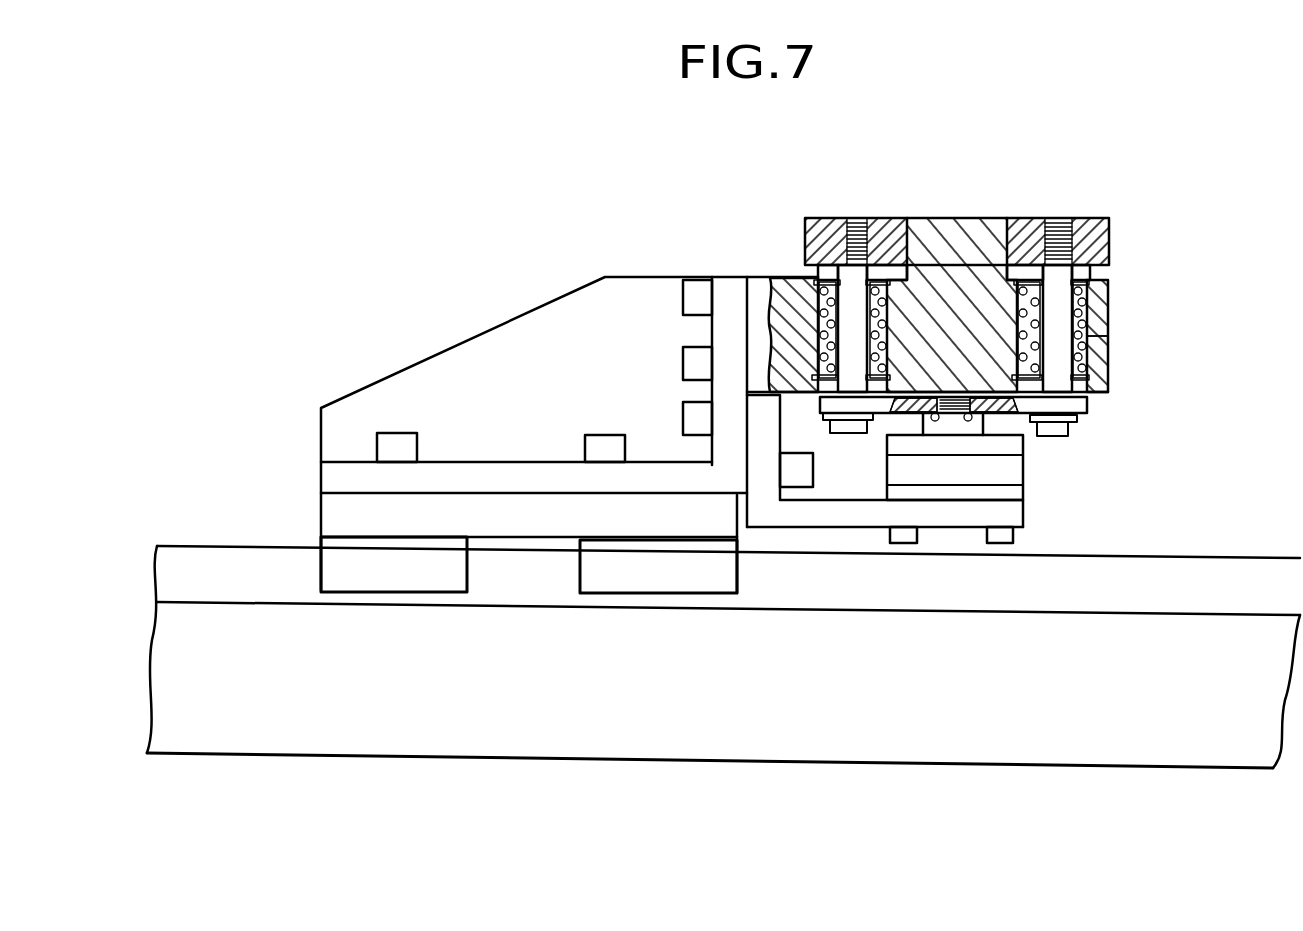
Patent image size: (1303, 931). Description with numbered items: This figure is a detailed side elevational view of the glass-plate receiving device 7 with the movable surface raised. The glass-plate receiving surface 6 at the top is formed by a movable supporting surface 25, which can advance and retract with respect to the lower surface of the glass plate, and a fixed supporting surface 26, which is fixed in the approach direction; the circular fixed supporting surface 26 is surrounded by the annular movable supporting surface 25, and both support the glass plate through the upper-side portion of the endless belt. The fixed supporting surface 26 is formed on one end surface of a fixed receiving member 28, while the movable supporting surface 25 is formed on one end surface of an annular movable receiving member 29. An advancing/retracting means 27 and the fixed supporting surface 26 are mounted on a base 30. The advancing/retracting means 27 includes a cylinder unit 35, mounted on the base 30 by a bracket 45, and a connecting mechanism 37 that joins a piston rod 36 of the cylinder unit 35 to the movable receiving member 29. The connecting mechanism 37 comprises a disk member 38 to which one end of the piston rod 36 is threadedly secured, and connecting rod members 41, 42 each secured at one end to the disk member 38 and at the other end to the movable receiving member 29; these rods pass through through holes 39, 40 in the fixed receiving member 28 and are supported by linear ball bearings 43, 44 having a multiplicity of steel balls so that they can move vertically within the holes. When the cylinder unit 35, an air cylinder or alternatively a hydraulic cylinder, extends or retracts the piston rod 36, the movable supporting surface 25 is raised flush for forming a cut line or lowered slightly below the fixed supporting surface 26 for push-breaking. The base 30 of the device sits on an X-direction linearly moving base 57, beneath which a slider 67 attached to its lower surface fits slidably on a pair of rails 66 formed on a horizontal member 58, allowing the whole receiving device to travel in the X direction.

The glass-plate receiving surface 6 is at (1033, 220).
The glass-plate receiving device 7 is at (977, 312).
The movable supporting surface 25 is at (827, 220).
The fixed supporting surface 26 is at (968, 197).
The advancing/retracting means 27 is at (939, 542).
The fixed receiving member 28 is at (947, 280).
The movable receiving member 29 is at (1108, 245).
The base 30 is at (529, 432).
The cylinder unit 35 is at (1008, 478).
The piston rod 36 is at (943, 430).
The connecting mechanism 37 is at (1090, 425).
The disk member 38 is at (989, 449).
The through hole 39 is at (807, 257).
The through hole 40 is at (1145, 333).
The connecting rod member 41 is at (855, 295).
The connecting rod member 42 is at (1108, 305).
The linear ball bearing 43 is at (817, 307).
The linear ball bearing 44 is at (1108, 370).
The bracket 45 is at (962, 520).
The X-direction linearly moving base 57 is at (340, 517).
The horizontal member 58 is at (718, 742).
The rail 66 is at (1228, 575).
The slider 67 is at (395, 578).